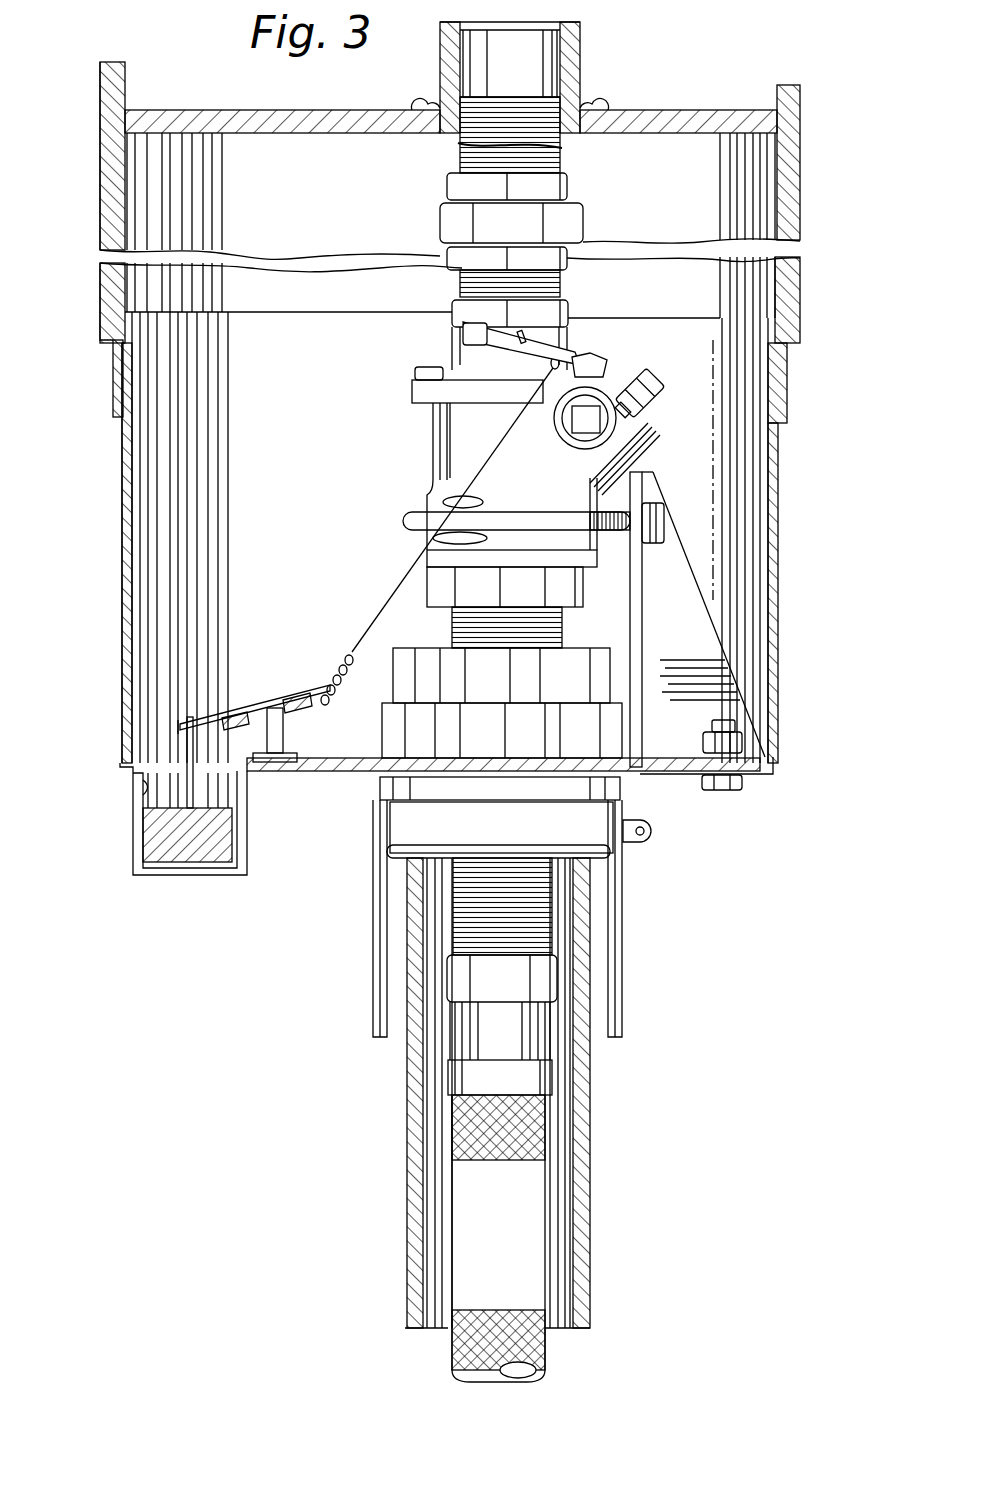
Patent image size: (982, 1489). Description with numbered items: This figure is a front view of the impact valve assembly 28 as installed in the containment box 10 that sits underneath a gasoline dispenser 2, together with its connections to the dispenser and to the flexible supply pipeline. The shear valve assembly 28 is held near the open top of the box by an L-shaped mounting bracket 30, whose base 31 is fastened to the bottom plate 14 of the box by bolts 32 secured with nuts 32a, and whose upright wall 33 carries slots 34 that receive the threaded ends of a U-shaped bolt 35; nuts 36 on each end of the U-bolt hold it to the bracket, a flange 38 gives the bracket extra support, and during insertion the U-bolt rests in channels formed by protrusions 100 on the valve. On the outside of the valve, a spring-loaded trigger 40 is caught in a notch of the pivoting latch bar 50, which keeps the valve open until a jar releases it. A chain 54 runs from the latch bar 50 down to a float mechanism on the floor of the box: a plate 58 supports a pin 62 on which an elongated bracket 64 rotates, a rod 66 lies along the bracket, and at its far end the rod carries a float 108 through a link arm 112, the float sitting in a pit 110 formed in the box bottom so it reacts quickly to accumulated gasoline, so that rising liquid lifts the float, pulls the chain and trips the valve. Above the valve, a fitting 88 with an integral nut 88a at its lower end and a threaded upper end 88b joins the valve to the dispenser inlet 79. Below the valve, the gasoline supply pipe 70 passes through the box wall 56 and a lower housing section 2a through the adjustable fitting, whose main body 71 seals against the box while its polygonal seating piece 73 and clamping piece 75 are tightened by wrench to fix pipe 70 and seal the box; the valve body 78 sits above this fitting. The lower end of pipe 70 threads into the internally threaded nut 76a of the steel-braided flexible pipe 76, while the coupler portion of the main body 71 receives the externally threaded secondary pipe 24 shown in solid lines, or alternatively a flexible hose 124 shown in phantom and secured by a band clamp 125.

The gasoline dispenser 2 is at (133, 197).
The housing flange 2a is at (800, 258).
The box 10 is at (120, 601).
The bottom plate 14 is at (318, 772).
The secondary pipe 24 is at (600, 928).
The impact valve assembly 28 is at (652, 428).
The mounting bracket 30 is at (778, 612).
The base 31 is at (752, 752).
The bolts 32 is at (727, 715).
The nuts 32a is at (742, 737).
The upright wall 33 is at (645, 643).
The slots 34 is at (658, 479).
The U-shaped bolt 35 is at (405, 523).
The nuts 36 is at (650, 547).
The flange 38 is at (728, 548).
The trigger 40 is at (592, 372).
The latch bar 50 is at (575, 337).
The chain 54 is at (356, 655).
The housing shell 56 is at (133, 492).
The plate 58 is at (118, 385).
The pin 62 is at (300, 690).
The bracket 64 is at (232, 712).
The rod 66 is at (270, 700).
The gasoline supply pipe 70 is at (545, 882).
The main body 71 is at (420, 886).
The seating piece 73 is at (385, 712).
The clamping piece 75 is at (393, 674).
The flexible pipe 76 is at (545, 1125).
The internally threaded nut 76a is at (560, 985).
The valve body 78 is at (415, 583).
The inlet 79 is at (583, 58).
The fitting 88 is at (573, 188).
The integral nut 88a is at (563, 266).
The threaded upper end 88b is at (565, 160).
The protrusions 100 is at (557, 517).
The float 108 is at (170, 862).
The pit 110 is at (143, 788).
The link arm 112 is at (185, 737).
The hose 124 is at (622, 965).
The band clamp 125 is at (655, 828).